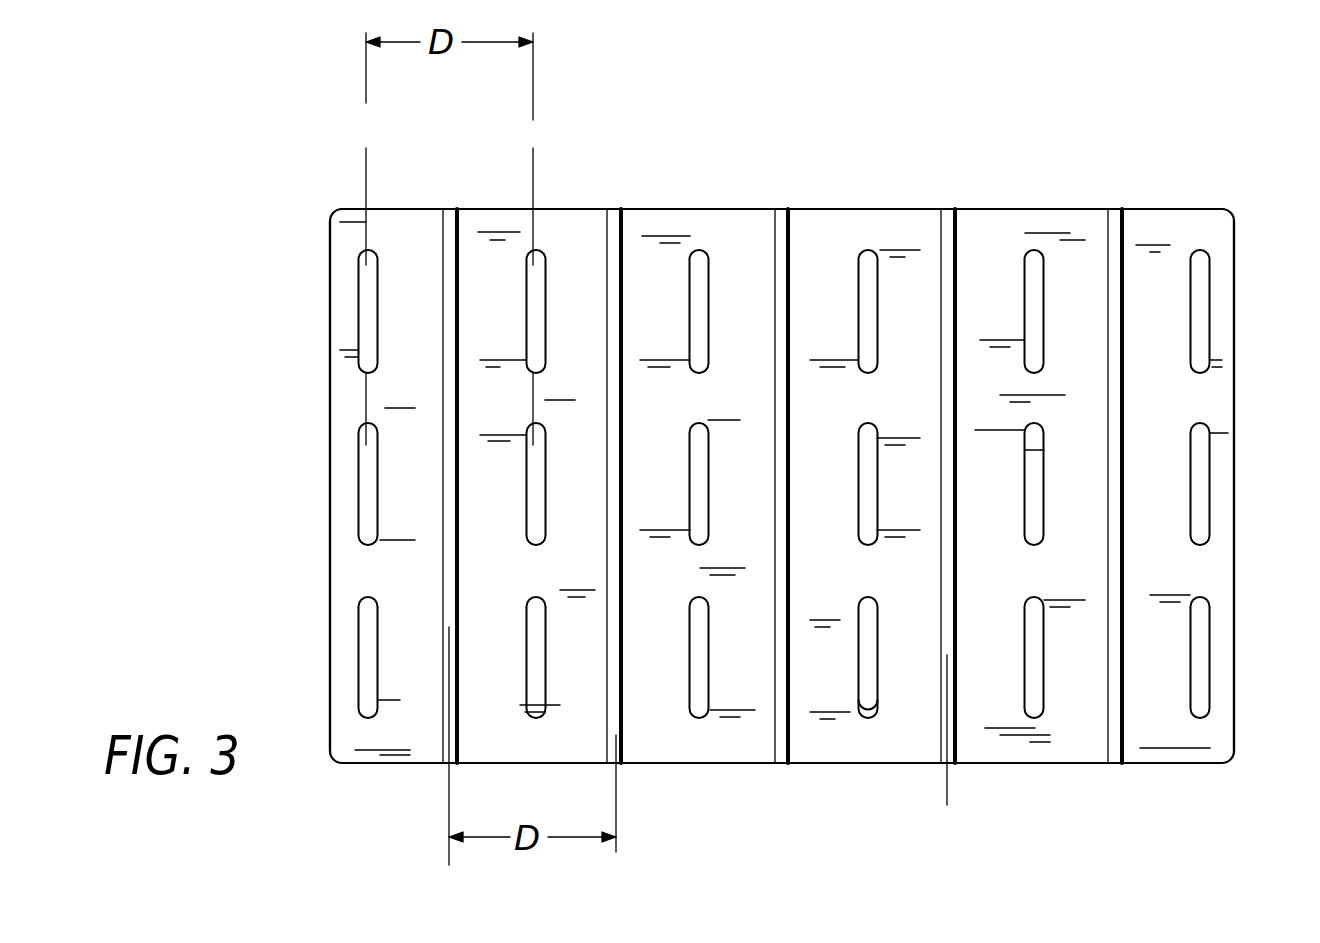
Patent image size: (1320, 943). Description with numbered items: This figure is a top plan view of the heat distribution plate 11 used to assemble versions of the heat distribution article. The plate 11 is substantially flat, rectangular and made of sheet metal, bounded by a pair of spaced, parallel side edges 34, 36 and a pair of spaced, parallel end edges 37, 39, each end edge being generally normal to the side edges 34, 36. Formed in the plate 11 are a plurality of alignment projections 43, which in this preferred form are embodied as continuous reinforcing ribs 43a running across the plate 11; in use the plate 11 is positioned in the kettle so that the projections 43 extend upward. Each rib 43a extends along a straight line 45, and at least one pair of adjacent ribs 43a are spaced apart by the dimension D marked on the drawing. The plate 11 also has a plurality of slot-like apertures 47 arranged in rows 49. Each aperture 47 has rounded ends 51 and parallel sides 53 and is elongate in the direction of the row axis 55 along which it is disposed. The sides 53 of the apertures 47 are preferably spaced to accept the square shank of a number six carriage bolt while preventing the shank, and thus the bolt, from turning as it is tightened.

The plate 11 is at (838, 240).
The side edge 34 is at (588, 209).
The side edge 36 is at (700, 765).
The end edge 37 is at (333, 405).
The end edge 39 is at (1236, 386).
The alignment projection 43 is at (448, 200).
The reinforcing rib 43a is at (620, 265).
The straight line 45 is at (451, 782).
The slot-like aperture 47 is at (365, 490).
The row 49 is at (377, 243).
The rounded end 51 is at (866, 720).
The parallel side 53 is at (822, 660).
The row axis 55 is at (366, 185).